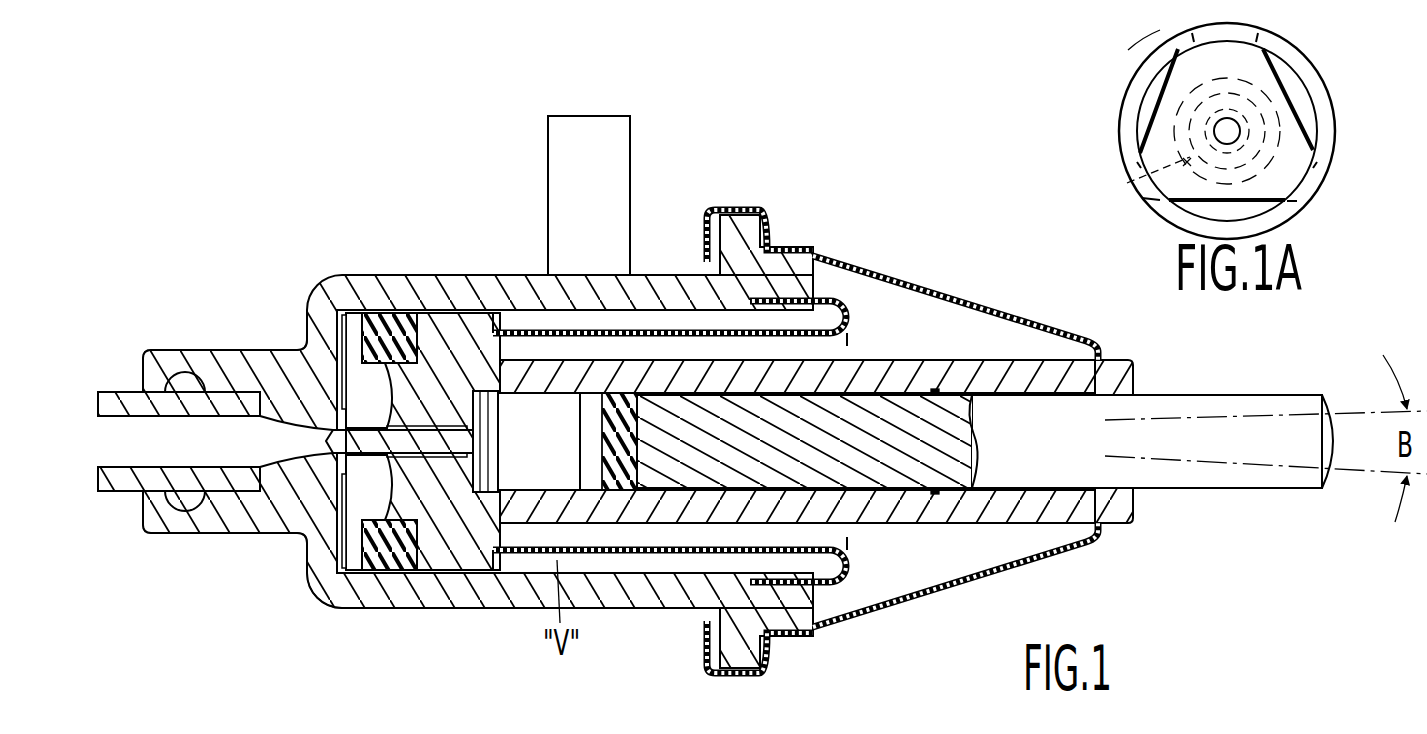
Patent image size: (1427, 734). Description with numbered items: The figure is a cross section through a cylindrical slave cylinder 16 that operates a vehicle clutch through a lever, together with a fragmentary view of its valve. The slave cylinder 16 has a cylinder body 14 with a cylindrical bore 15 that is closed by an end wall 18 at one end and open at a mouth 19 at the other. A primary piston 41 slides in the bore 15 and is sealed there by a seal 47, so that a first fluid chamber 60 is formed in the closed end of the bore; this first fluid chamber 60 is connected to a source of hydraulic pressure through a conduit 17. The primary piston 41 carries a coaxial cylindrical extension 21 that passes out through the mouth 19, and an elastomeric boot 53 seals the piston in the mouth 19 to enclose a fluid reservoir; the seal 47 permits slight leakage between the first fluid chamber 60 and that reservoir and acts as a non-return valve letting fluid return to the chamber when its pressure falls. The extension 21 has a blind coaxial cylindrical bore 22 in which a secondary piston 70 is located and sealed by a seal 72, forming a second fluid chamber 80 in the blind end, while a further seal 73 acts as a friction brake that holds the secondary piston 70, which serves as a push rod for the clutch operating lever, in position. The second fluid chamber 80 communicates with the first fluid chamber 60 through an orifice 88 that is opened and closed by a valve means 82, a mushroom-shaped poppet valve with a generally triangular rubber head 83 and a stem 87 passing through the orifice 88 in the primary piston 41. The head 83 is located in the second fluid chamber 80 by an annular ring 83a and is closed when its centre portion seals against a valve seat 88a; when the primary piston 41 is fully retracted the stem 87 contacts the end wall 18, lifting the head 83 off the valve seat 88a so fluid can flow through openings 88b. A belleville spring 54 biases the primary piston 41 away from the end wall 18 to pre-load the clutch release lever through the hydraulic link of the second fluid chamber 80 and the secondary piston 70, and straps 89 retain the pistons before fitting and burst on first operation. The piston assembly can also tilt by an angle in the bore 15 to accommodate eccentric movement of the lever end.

In FIG. 1, the cylinder body 14 is at (471, 276).
In FIG. 1, the cylindrical bore 15 is at (652, 312).
In FIG. 1, the slave cylinder 16 is at (431, 259).
In FIG. 1, the conduit 17 is at (146, 394).
In FIG. 1, the end wall 18 is at (305, 580).
In FIG. 1, the mouth 19 is at (824, 618).
In FIG. 1, the coaxial cylindrical extension 21 is at (882, 364).
In FIG. 1, the blind coaxial cylindrical bore 22 is at (525, 402).
In FIG. 1, the primary piston 41 is at (503, 574).
In FIG. 1, the seal 47 is at (382, 570).
In FIG. 1, the elastomeric boot 53 is at (632, 586).
In FIG. 1, the belleville spring 54 is at (300, 350).
In FIG. 1, the first fluid chamber 60 is at (352, 312).
In FIG. 1, the secondary piston 70 is at (1241, 404).
In FIG. 1, the seal 72 is at (605, 395).
In FIG. 1, the seal 73 is at (937, 389).
In FIG. 1, the second fluid chamber 80 is at (555, 474).
In FIG. 1, the valve means 82 is at (300, 529).
In FIG. 1, the rubber head 83 is at (498, 423).
In FIG. 1A, the rubber head 83 is at (1322, 178).
In FIG. 1, the annular ring 83a is at (488, 493).
In FIG. 1A, the annular ring 83a is at (1153, 57).
In FIG. 1, the stem 87 is at (333, 438).
In FIG. 1, the orifice 88 is at (433, 568).
In FIG. 1, the valve seat 88a is at (467, 412).
In FIG. 1A, the valve seat 88a is at (1127, 183).
In FIG. 1A, the openings 88b is at (1145, 100).
In FIG. 1, the straps 89 is at (893, 270).